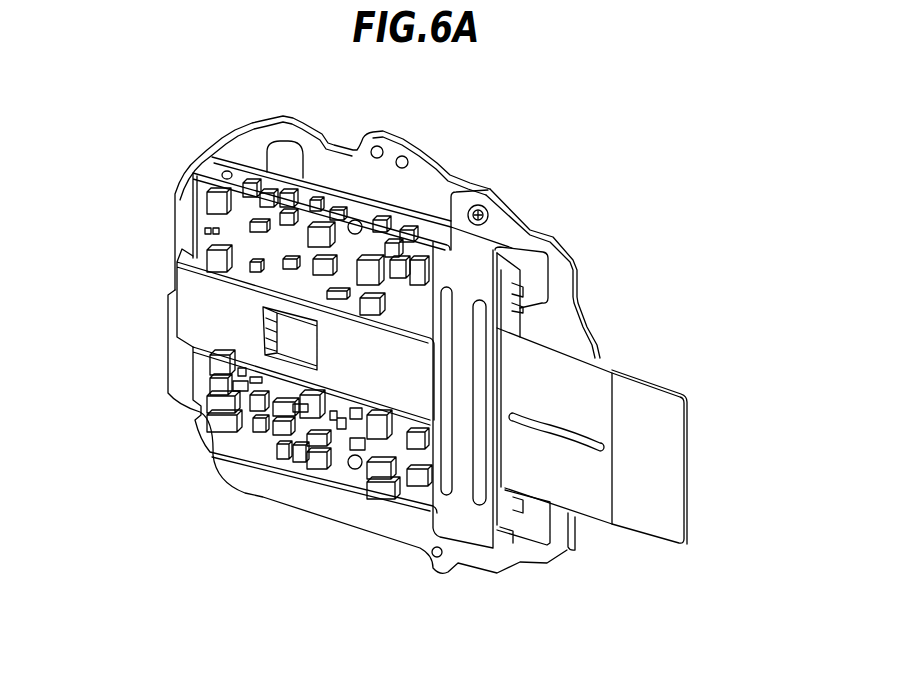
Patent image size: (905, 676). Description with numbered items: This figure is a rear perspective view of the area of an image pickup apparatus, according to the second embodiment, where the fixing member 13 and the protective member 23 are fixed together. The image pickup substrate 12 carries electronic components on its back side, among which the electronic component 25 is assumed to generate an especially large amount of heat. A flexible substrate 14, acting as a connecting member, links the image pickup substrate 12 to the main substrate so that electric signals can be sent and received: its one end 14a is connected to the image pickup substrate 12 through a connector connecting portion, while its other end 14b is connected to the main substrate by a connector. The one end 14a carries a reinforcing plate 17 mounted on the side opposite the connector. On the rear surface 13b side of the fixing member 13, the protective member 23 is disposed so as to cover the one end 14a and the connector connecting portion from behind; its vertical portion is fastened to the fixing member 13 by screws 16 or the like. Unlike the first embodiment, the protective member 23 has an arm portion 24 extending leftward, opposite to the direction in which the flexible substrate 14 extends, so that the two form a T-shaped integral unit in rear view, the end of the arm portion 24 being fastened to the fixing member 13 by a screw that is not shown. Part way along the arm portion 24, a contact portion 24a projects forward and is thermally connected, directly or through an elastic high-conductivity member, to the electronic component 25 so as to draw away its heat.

The image pickup substrate 12 is at (345, 468).
The fixing member 13 is at (430, 183).
The rear surface 13b is at (568, 310).
The flexible substrate 14 is at (615, 468).
The one end 14a is at (563, 500).
The other end 14b is at (669, 533).
The screw 16 is at (480, 204).
The reinforcing plate 17 is at (500, 450).
The protective member 23 is at (463, 500).
The arm portion 24 is at (259, 410).
The contact portion 24a is at (283, 337).
The electronic component 25 is at (283, 287).